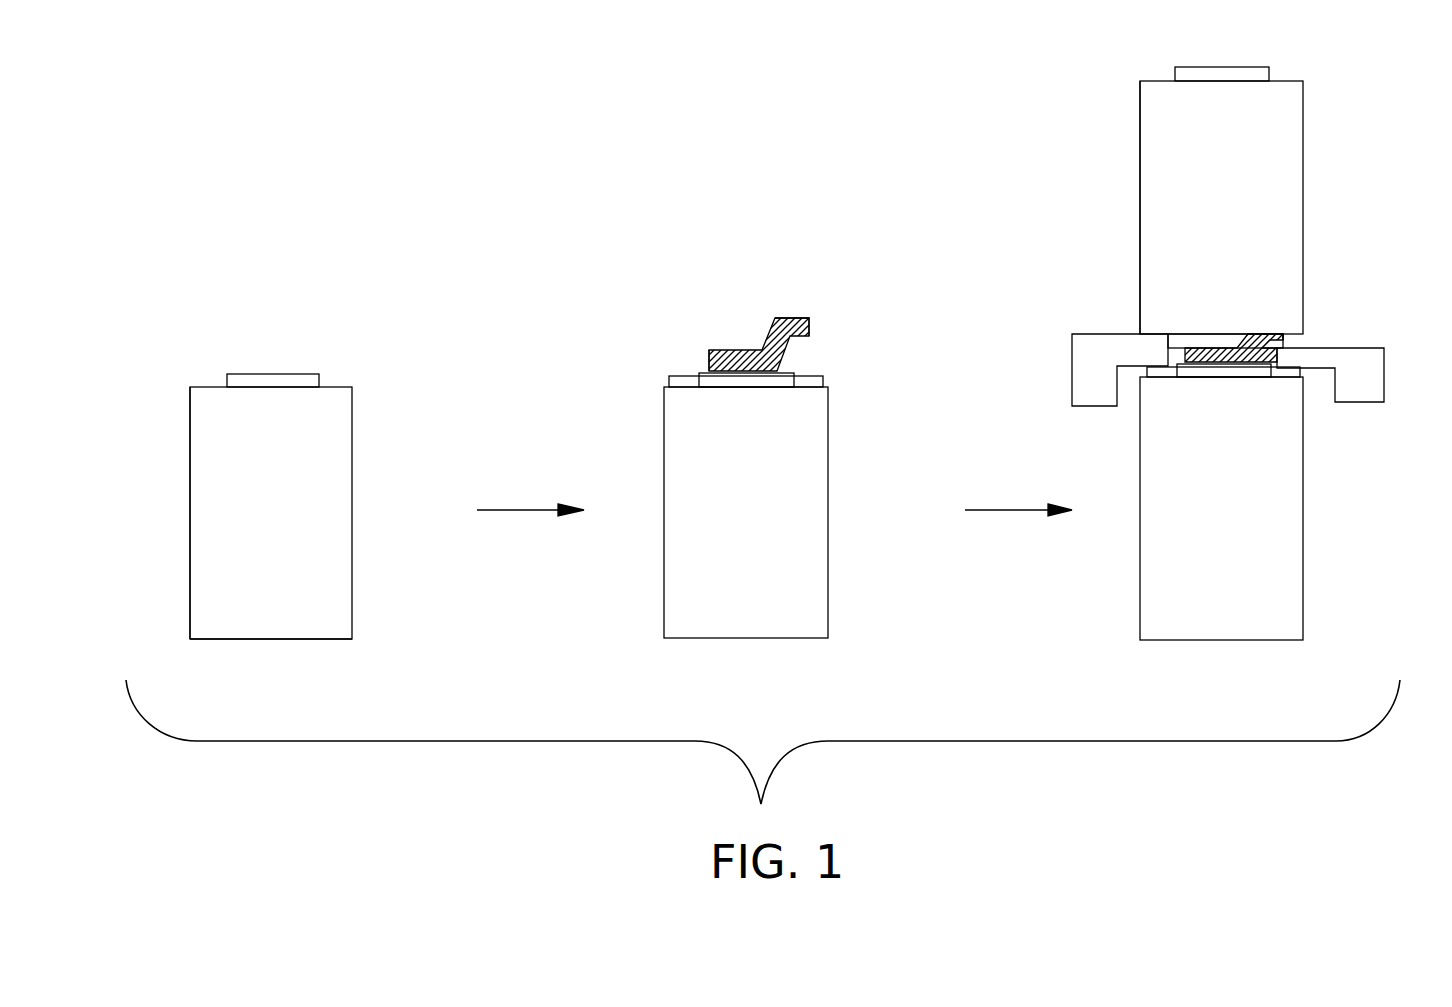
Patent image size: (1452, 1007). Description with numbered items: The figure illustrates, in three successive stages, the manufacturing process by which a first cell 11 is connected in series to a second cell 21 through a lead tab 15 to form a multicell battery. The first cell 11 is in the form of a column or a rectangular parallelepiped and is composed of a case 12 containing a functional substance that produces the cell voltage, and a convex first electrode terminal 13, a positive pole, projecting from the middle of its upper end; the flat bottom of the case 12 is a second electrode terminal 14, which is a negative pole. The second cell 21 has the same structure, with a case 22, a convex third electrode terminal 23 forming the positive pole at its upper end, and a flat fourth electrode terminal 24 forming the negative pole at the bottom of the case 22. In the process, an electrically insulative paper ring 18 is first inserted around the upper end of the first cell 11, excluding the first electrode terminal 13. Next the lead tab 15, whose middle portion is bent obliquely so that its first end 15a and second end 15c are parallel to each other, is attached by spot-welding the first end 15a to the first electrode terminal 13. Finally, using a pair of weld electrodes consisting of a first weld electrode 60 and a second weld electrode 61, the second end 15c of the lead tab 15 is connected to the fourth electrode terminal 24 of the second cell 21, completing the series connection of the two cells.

The first cell 11 is at (317, 548).
The case 12 is at (190, 478).
The first electrode terminal 13 is at (272, 384).
The second electrode terminal 14 is at (243, 640).
The lead tab 15 is at (737, 350).
The first end 15a is at (708, 362).
The second end 15c is at (787, 320).
The paper ring 18 is at (813, 383).
The second cell 21 is at (1260, 178).
The case 22 is at (1140, 232).
The third electrode terminal 23 is at (1232, 73).
The fourth electrode terminal 24 is at (1180, 333).
The first weld electrode 60 is at (1098, 348).
The second weld electrode 61 is at (1373, 366).